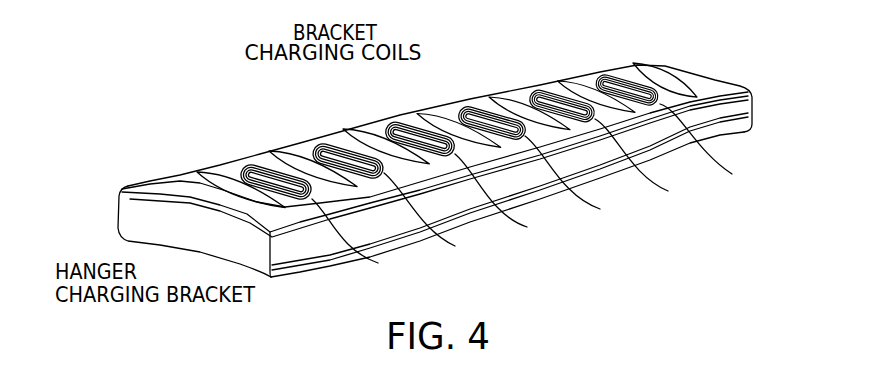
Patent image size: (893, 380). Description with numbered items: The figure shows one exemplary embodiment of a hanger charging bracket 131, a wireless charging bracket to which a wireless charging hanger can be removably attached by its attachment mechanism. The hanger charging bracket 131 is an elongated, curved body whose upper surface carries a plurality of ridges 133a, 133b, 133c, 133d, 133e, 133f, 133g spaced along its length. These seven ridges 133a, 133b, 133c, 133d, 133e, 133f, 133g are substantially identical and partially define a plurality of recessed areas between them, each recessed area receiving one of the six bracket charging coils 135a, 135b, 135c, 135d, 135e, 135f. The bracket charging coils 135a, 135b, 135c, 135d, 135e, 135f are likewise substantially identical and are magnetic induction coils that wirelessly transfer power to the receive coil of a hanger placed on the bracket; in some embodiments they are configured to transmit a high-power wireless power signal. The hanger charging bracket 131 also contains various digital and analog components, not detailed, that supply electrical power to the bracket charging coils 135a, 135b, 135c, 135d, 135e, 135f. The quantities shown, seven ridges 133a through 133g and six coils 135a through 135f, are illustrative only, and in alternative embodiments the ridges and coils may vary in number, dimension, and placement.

The hanger charging bracket 131 is at (193, 249).
The ridge 133a is at (197, 172).
The ridge 133b is at (275, 153).
The ridge 133c is at (352, 130).
The ridge 133d is at (425, 114).
The ridge 133e is at (494, 96).
The ridge 133f is at (558, 80).
The ridge 133g is at (633, 63).
The bracket charging coil 135a is at (370, 241).
The bracket charging coil 135b is at (444, 215).
The bracket charging coil 135c is at (514, 196).
The bracket charging coil 135d is at (587, 177).
The bracket charging coil 135e is at (656, 160).
The bracket charging coil 135f is at (719, 144).